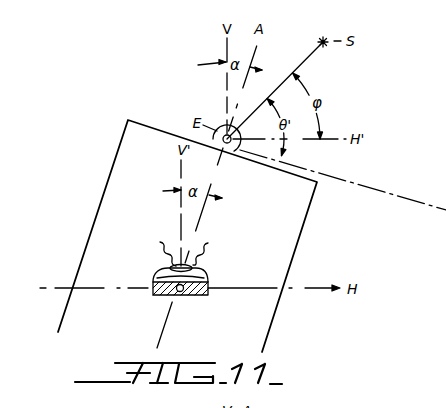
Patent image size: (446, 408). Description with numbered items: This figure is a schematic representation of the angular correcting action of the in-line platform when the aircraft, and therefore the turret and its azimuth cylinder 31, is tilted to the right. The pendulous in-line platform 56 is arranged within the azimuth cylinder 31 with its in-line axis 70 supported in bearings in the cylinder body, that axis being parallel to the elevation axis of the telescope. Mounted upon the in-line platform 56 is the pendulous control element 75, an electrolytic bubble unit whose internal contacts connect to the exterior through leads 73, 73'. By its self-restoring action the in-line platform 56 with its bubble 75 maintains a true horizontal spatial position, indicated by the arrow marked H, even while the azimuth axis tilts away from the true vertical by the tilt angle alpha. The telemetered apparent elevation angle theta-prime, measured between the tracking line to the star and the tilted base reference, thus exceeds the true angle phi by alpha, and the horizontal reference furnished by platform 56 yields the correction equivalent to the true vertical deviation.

The azimuth cylinder 31 is at (100, 203).
The in-line platform 56 is at (203, 295).
The in-line axis 70 is at (173, 293).
The lead 73 is at (155, 254).
The lead 73' is at (216, 254).
The pendulous control element 75 is at (208, 278).